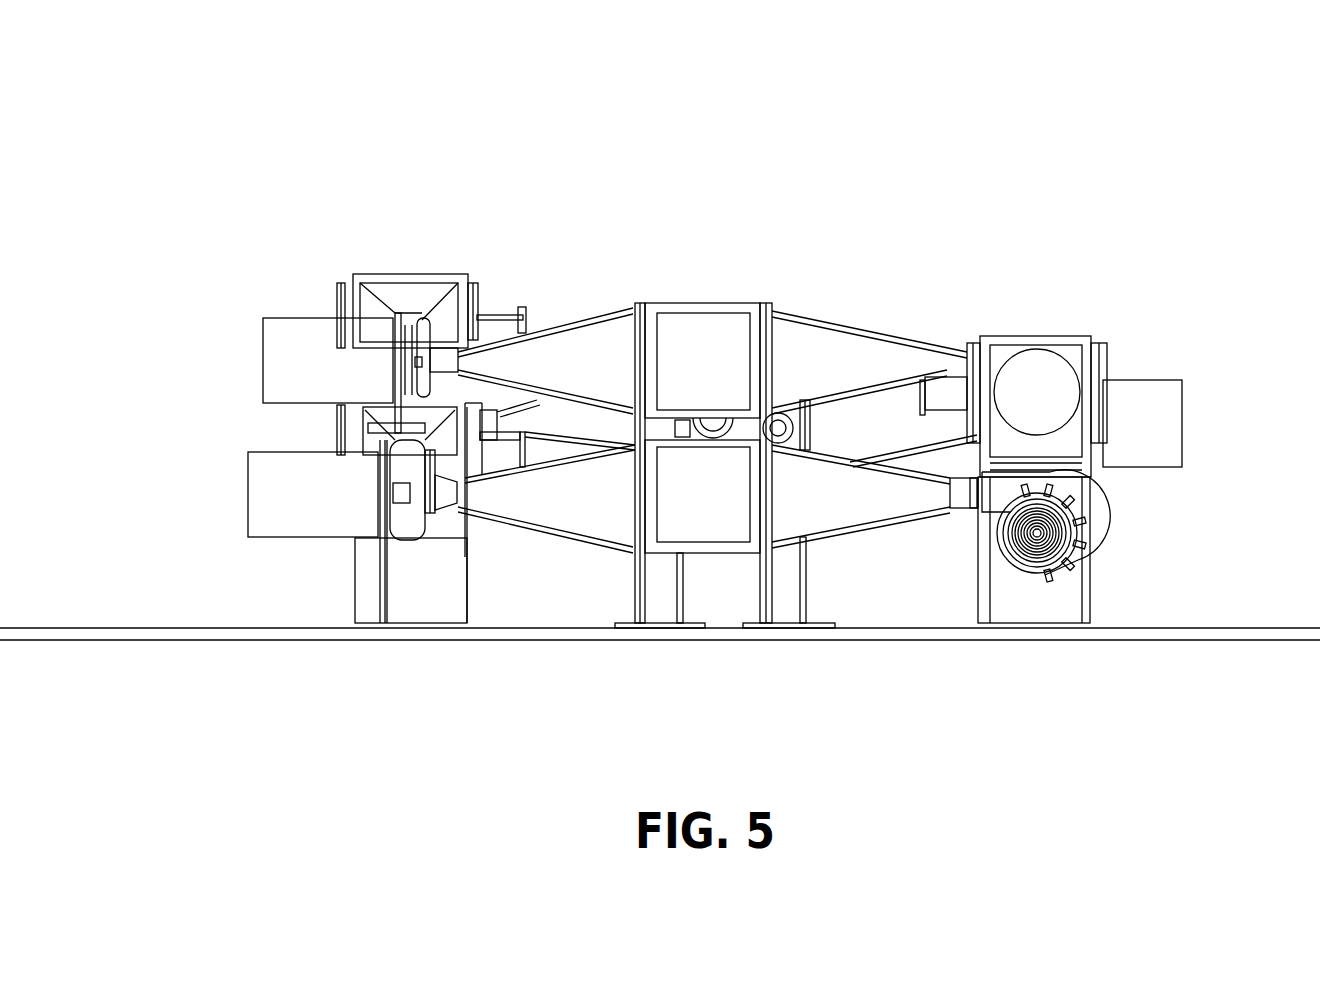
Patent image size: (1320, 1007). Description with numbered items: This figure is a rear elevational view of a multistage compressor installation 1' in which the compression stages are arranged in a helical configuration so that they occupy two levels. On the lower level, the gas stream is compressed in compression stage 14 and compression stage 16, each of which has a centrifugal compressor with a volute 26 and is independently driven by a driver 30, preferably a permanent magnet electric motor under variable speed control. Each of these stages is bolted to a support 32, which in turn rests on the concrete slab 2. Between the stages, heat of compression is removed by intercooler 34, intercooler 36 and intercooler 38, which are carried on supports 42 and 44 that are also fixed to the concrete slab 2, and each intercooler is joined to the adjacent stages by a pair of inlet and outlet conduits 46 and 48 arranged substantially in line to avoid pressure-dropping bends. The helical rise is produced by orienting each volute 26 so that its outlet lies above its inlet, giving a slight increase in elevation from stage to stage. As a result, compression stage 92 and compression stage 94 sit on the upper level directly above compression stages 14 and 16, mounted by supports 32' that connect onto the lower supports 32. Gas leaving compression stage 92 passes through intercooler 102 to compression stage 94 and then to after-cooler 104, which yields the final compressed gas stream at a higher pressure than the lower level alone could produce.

The multistage compressor installation 1' is at (1074, 118).
The concrete slab 2 is at (1265, 625).
The compression stage 14 is at (1133, 543).
The compression stage 16 is at (311, 559).
The volute 26 is at (420, 332).
The driver 30 is at (280, 338).
The support 32 is at (690, 558).
The support 32' is at (722, 399).
The intercooler 34 is at (717, 571).
The intercooler 36 is at (320, 428).
The intercooler 38 is at (828, 425).
The support 42 is at (458, 533).
The support 44 is at (637, 588).
The inlet conduit 46 is at (511, 395).
The outlet conduit 48 is at (597, 272).
The compression stage 92 is at (1090, 310).
The compression stage 94 is at (283, 279).
The intercooler 102 is at (704, 258).
The after-cooler 104 is at (414, 251).